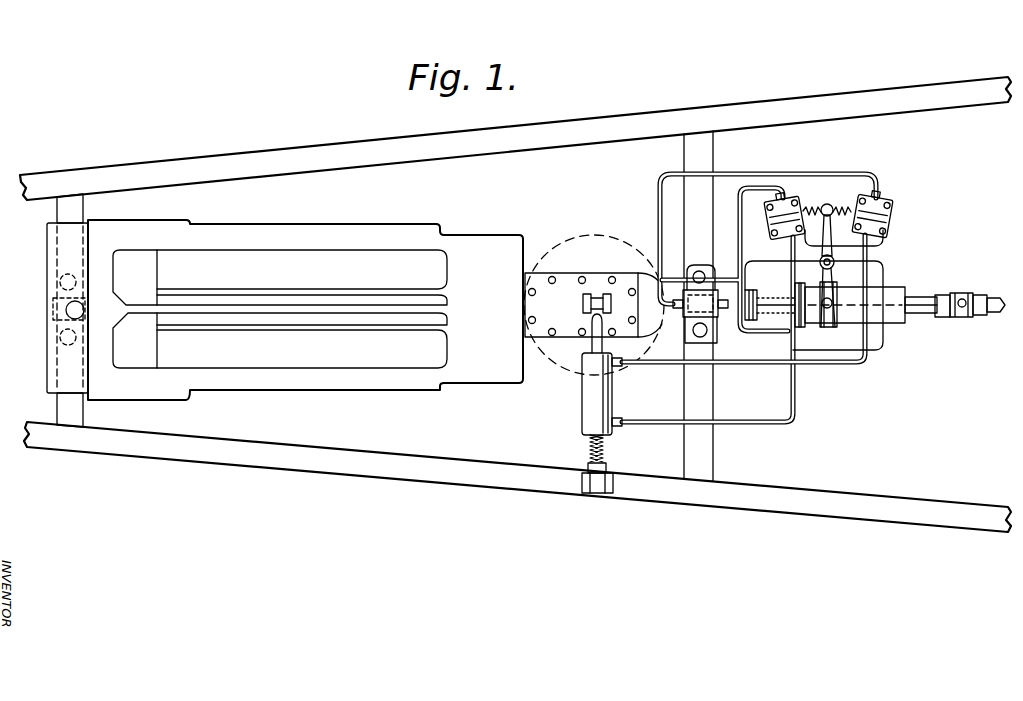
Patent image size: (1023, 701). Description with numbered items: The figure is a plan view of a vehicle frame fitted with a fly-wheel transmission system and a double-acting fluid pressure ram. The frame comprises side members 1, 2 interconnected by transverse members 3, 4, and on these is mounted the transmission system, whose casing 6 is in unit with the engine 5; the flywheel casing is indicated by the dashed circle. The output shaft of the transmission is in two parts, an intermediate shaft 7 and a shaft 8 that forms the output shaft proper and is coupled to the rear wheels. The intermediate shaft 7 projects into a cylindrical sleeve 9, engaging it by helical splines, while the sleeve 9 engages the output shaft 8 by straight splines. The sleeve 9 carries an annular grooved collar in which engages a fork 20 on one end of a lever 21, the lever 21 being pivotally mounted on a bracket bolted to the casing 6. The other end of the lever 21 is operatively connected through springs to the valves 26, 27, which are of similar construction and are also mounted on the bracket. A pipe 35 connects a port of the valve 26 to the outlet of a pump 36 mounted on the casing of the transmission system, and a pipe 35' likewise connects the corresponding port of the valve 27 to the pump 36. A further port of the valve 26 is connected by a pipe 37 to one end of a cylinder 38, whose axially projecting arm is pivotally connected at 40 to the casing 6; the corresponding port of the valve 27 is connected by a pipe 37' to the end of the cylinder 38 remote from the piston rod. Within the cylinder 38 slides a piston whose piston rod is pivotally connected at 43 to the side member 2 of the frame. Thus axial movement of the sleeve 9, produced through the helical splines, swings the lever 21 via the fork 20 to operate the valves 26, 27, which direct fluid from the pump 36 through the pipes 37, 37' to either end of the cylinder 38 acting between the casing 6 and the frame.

The side member 1 is at (257, 161).
The side member 2 is at (316, 463).
The transverse member 3 is at (63, 405).
The transverse member 4 is at (688, 449).
The engine 5 is at (318, 236).
The casing 6 is at (557, 284).
The intermediate shaft 7 is at (777, 306).
The output shaft 8 is at (924, 314).
The cylindrical sleeve 9 is at (883, 289).
The fork 20 is at (827, 325).
The lever 21 is at (833, 238).
The valve 26 is at (790, 191).
The valve 27 is at (887, 195).
The pipe 35 is at (768, 225).
The pipe 35' is at (699, 252).
The pump 36 is at (714, 318).
The pipe 37 is at (730, 333).
The pipe 37' is at (761, 312).
The cylinder 38 is at (590, 400).
The pivotal connection 40 is at (584, 306).
The pivotal connection 43 is at (595, 495).